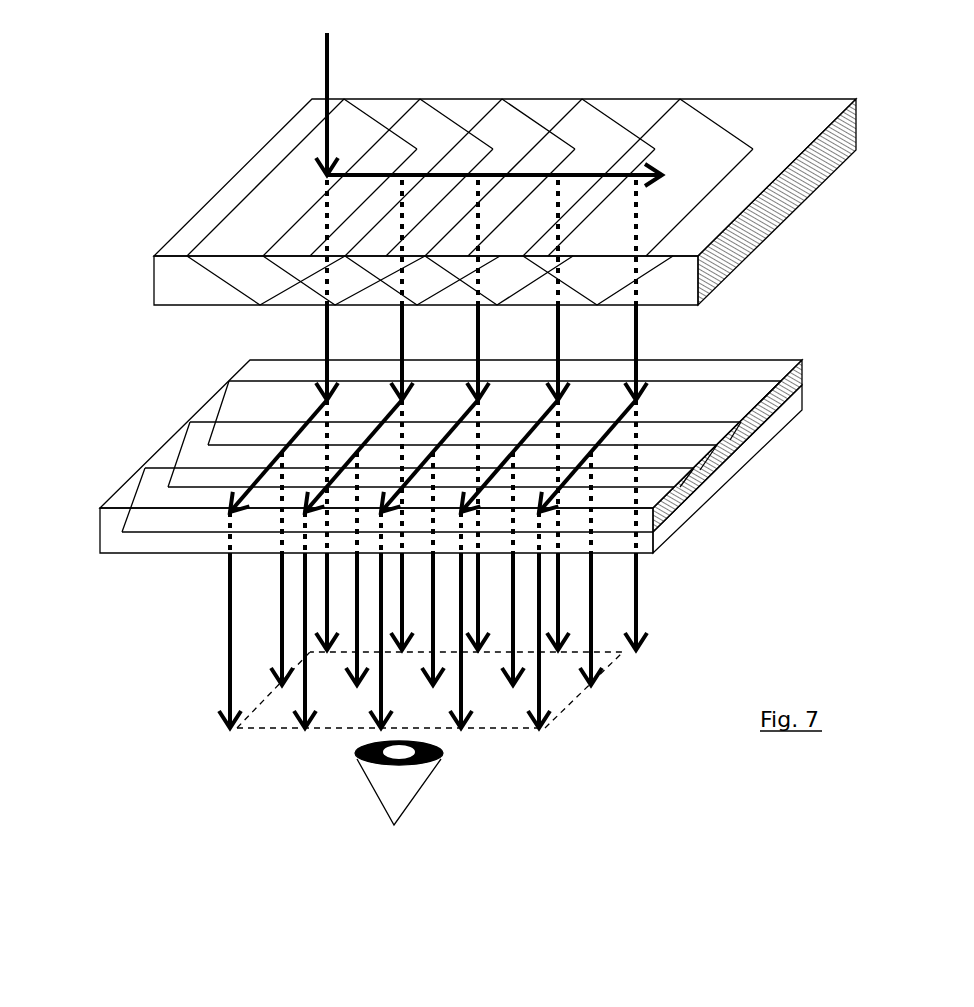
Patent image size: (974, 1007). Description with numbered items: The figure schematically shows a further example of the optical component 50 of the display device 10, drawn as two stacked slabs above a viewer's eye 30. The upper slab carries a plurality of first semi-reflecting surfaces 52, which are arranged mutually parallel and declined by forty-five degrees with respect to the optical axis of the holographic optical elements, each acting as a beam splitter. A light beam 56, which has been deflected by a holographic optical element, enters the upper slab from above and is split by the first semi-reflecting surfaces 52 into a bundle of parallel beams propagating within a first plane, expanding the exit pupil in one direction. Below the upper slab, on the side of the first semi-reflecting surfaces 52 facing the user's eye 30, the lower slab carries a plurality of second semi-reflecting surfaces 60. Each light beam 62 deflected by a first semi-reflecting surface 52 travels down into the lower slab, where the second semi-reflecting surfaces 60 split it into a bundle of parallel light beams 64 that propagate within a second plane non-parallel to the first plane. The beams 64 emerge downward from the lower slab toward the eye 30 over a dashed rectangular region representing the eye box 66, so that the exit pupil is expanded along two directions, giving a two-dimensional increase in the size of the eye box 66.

The display device 10 is at (875, 340).
The user's eye 30 is at (344, 784).
The optical component 50 is at (880, 426).
The first semi-reflecting surfaces 52 is at (228, 229).
The light beam 56 is at (324, 92).
The second semi-reflecting surfaces 60 is at (196, 457).
The light beam 62 is at (322, 310).
The bundle of parallel light beams 64 is at (660, 605).
The eye box 66 is at (257, 706).